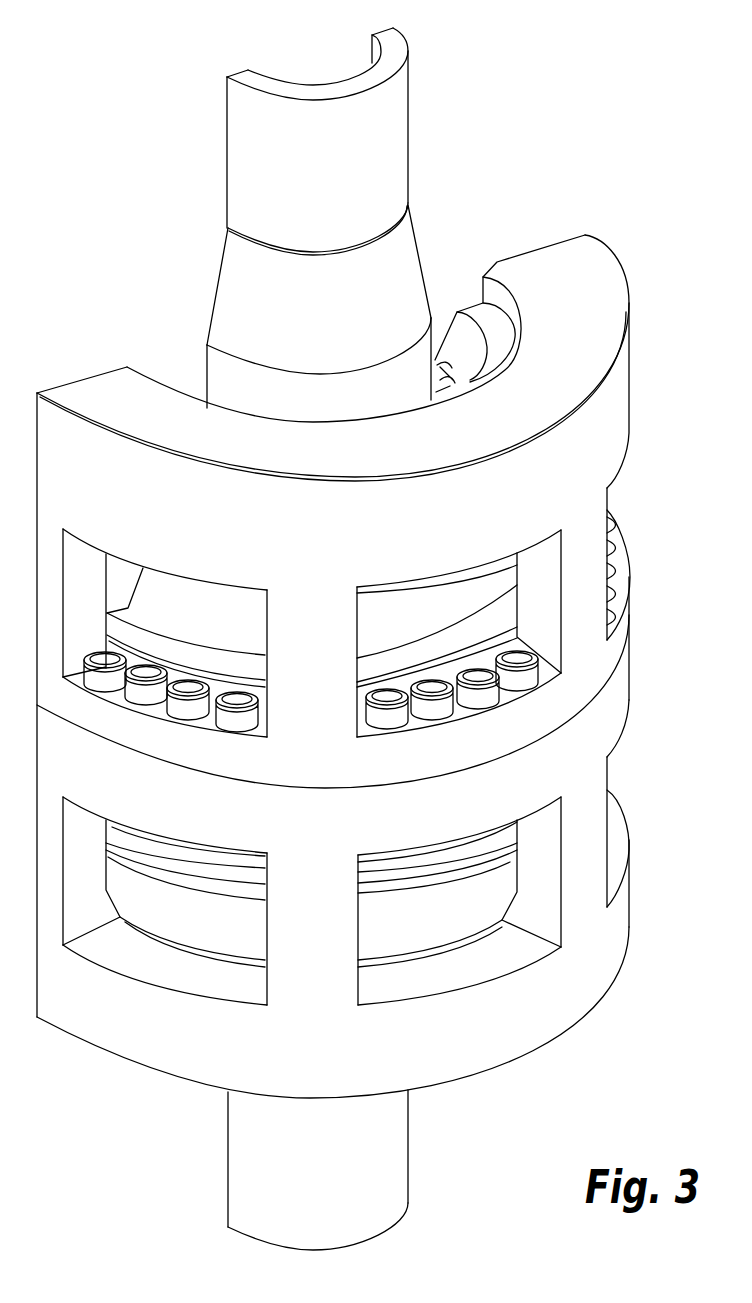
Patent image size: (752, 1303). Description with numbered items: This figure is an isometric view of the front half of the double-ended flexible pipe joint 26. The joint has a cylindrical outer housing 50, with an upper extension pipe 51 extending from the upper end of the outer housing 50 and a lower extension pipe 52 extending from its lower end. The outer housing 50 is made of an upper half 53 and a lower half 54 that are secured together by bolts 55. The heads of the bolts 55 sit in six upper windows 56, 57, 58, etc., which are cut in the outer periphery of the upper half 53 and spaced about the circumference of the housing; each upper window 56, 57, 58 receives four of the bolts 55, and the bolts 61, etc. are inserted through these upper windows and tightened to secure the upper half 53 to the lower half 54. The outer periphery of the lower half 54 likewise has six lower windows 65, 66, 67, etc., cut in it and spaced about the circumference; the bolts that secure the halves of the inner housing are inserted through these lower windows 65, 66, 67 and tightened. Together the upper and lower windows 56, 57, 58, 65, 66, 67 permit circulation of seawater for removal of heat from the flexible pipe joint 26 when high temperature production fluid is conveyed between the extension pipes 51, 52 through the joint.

The double-ended flexible pipe joint 26 is at (598, 152).
The cylindrical outer housing 50 is at (618, 243).
The upper extension pipe 51 is at (413, 236).
The lower extension pipe 52 is at (407, 1130).
The upper half of the outer housing 53 is at (632, 372).
The lower half of the outer housing 54 is at (629, 935).
The bolts 55 is at (537, 634).
The upper window 56 is at (167, 573).
The upper window 57 is at (484, 565).
The upper window 58 is at (622, 478).
The bolt 61 is at (446, 722).
The lower window 65 is at (207, 992).
The lower window 66 is at (478, 974).
The lower window 67 is at (620, 854).